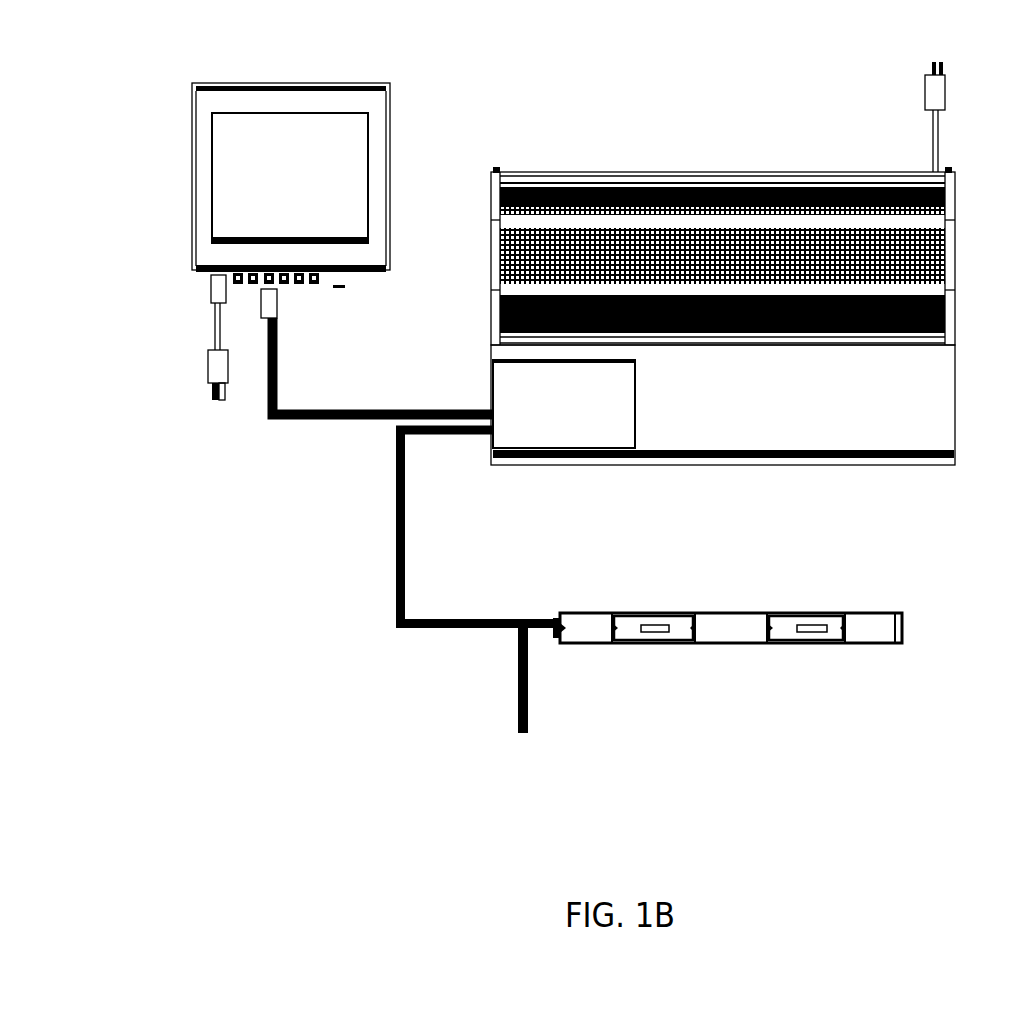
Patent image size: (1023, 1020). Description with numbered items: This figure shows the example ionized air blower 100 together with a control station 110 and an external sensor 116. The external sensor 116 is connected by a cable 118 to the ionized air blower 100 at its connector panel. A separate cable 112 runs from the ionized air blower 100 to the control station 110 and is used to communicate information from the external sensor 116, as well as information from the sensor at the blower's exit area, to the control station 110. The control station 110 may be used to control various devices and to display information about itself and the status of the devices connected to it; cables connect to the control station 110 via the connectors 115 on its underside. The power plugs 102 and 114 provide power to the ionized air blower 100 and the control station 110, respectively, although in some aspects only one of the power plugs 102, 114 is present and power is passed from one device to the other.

The ionized air blower 100 is at (723, 277).
The power plug 102 is at (955, 92).
The control station 110 is at (291, 162).
The cable 112 is at (376, 352).
The power plug 114 is at (193, 348).
The connectors 115 is at (336, 288).
The external sensor 116 is at (731, 602).
The cable 118 is at (470, 581).